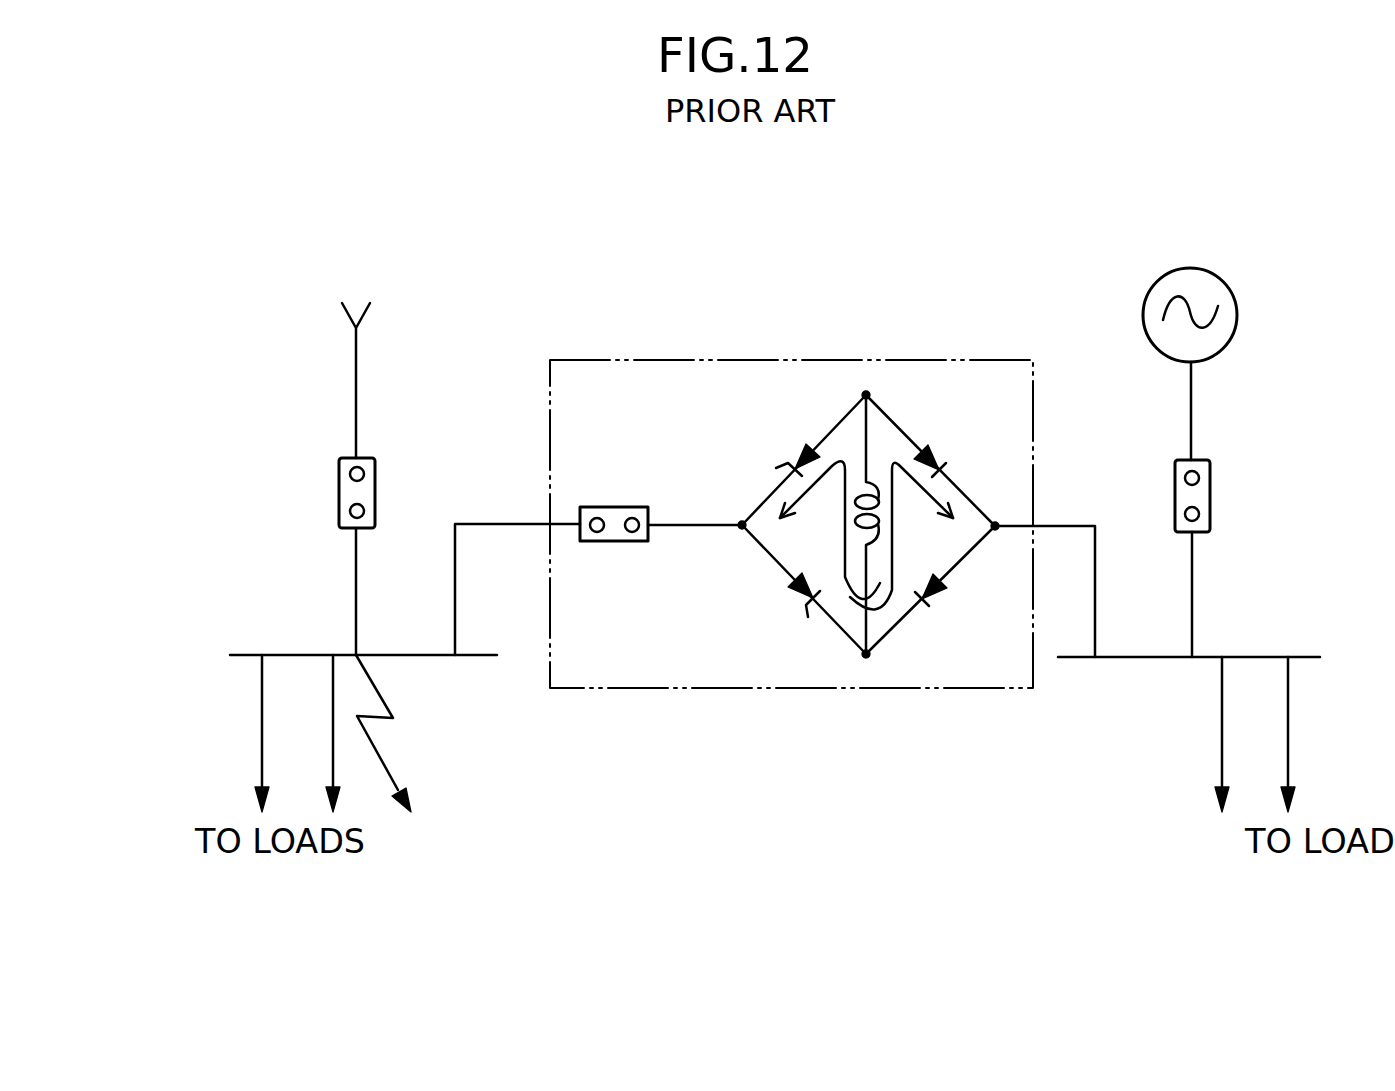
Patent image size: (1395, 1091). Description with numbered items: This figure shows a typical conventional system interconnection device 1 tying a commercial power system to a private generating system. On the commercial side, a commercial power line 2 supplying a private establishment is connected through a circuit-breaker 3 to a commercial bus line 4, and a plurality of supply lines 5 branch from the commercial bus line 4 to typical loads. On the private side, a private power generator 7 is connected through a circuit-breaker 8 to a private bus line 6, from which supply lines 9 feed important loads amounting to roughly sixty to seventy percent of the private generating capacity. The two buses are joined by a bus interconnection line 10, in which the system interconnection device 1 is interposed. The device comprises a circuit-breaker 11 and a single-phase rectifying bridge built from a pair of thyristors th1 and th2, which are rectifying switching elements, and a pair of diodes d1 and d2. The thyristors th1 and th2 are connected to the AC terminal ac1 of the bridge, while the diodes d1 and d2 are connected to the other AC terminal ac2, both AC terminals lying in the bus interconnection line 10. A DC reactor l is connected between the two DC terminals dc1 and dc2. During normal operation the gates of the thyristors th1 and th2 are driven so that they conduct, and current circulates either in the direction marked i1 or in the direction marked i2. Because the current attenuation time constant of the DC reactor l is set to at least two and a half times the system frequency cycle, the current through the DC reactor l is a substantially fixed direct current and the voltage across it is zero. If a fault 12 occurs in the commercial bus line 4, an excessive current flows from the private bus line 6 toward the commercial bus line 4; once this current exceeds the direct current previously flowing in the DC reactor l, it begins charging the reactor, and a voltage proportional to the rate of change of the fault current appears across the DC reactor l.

The system interconnection device 1 is at (745, 360).
The commercial power line 2 is at (355, 385).
The circuit-breaker 3 is at (338, 492).
The commercial bus line 4 is at (290, 655).
The supply lines 5 is at (262, 702).
The private bus line 6 is at (1275, 657).
The private power generator 7 is at (1238, 310).
The circuit-breaker 8 is at (1212, 492).
The supply lines 9 is at (1222, 702).
The bus interconnection line 10 is at (1072, 528).
The circuit-breaker 11 is at (618, 508).
The fault 12 is at (377, 745).
The thyristor th1 is at (795, 460).
The thyristor th2 is at (794, 593).
The diode d1 is at (933, 447).
The diode d2 is at (937, 600).
The DC reactor l is at (883, 512).
The current direction i1 is at (845, 532).
The current direction i2 is at (890, 555).
The AC terminal ac1 is at (748, 497).
The AC terminal ac2 is at (995, 530).
The DC terminal dc1 is at (865, 395).
The DC terminal dc2 is at (866, 654).